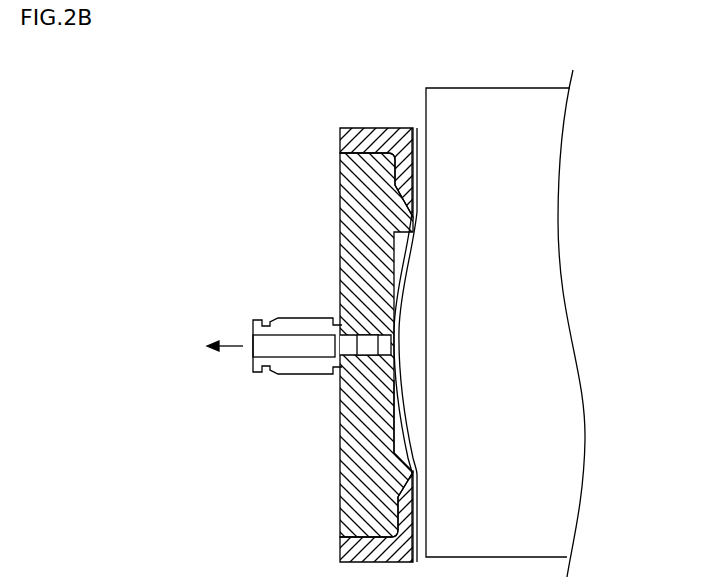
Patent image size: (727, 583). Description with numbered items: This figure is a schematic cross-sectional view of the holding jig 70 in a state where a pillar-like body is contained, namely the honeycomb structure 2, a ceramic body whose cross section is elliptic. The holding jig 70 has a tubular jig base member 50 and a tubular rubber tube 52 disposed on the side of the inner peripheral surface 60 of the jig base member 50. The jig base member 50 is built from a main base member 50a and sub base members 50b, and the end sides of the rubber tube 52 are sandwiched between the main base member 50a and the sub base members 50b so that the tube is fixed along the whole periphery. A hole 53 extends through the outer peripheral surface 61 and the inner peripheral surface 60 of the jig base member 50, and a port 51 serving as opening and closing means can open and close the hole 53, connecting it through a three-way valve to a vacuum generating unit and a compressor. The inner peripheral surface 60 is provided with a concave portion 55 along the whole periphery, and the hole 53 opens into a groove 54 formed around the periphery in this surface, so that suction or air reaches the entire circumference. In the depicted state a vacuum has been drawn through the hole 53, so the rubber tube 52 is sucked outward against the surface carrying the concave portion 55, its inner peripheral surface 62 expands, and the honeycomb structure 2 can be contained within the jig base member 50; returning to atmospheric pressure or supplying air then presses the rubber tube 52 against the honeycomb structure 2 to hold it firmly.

The honeycomb structure 2 is at (552, 132).
The holding jig 70 is at (605, 185).
The jig base member 50 is at (310, 342).
The main base member 50a is at (336, 345).
The sub base member 50b is at (340, 136).
The port 51 is at (293, 318).
The rubber tube 52 is at (403, 415).
The hole 53 is at (368, 348).
The groove 54 is at (352, 317).
The concave portion 55 is at (356, 268).
The inner peripheral surface 60 is at (416, 128).
The outer peripheral surface 61 is at (340, 213).
The inner peripheral surface 62 is at (416, 446).